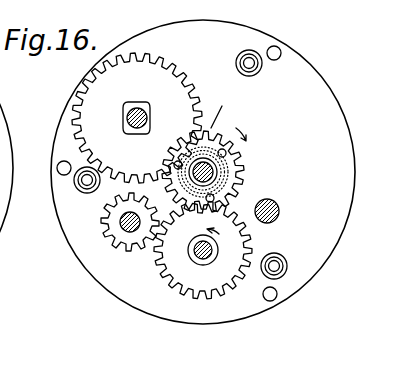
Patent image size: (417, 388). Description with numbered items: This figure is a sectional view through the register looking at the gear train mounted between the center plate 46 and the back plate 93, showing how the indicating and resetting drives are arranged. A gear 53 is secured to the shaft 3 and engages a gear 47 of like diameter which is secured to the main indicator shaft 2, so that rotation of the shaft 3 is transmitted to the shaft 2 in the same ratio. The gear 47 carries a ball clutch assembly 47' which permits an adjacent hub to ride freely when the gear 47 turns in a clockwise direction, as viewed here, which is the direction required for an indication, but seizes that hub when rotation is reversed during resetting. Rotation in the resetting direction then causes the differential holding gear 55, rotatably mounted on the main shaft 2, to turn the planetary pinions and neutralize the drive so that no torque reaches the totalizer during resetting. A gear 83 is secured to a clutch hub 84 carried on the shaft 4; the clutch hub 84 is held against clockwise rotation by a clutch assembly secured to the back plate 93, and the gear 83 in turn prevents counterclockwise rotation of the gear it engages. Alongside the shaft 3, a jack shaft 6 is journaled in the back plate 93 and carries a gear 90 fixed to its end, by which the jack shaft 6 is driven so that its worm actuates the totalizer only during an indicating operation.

The back plate 93 is at (331, 94).
The center plate 46 is at (9, 168).
The gear 83 is at (172, 69).
The clutch hub 84 is at (144, 111).
The shaft 4 is at (126, 119).
The gear 47 is at (226, 172).
The ball clutch assembly 47' is at (228, 116).
The main indicator shaft 2 is at (210, 171).
The jack shaft 6 is at (120, 222).
The gear 90 is at (115, 243).
The differential holding gear 55 is at (211, 302).
The shaft 3 is at (196, 255).
The gear 53 is at (246, 250).